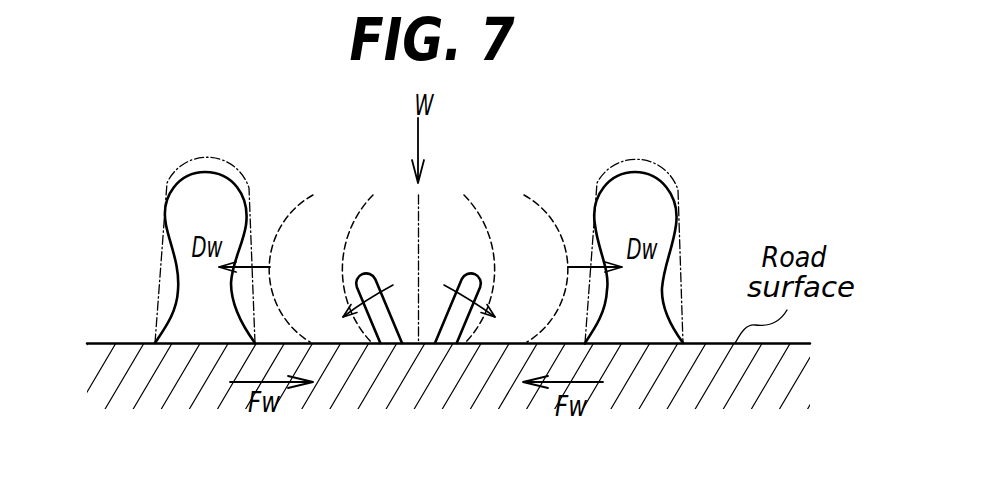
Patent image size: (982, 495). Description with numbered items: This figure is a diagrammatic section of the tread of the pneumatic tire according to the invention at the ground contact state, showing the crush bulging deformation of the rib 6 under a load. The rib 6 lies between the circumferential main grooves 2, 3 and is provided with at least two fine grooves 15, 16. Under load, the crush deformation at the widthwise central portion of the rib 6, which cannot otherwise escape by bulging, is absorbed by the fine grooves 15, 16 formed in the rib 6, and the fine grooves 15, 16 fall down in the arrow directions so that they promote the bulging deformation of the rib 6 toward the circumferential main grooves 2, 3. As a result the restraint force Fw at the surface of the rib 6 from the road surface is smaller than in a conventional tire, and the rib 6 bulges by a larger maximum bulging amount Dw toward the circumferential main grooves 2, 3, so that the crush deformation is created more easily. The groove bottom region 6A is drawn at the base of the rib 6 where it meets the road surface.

The circumferential main groove 2 is at (208, 300).
The circumferential main groove 3 is at (642, 313).
The rib 6 is at (520, 327).
The groove bottom 6A is at (405, 343).
The fine groove 15 is at (387, 328).
The fine groove 16 is at (455, 330).